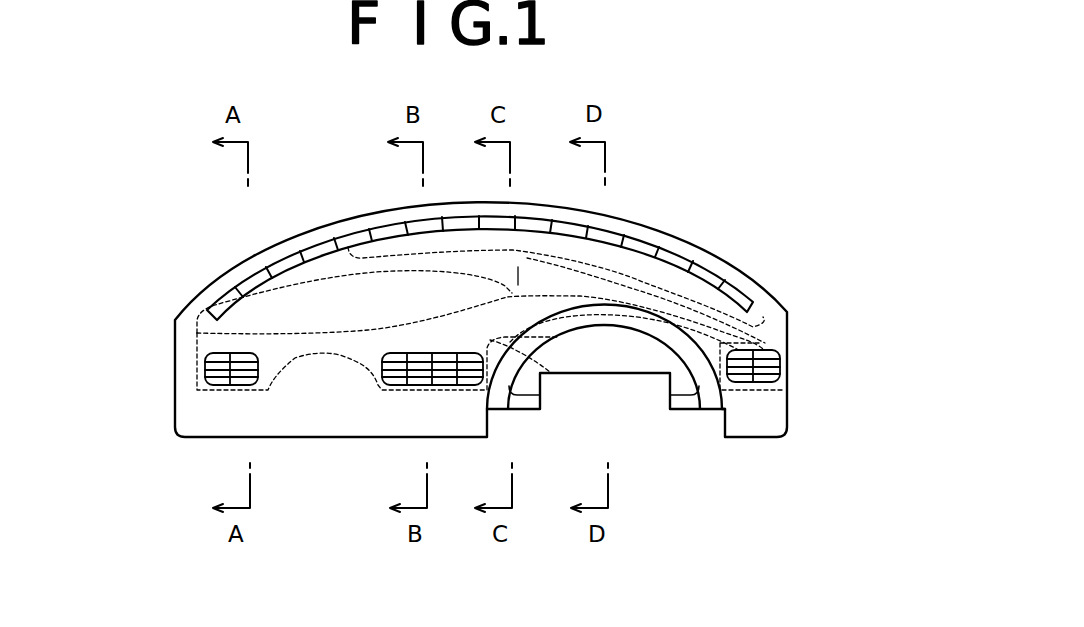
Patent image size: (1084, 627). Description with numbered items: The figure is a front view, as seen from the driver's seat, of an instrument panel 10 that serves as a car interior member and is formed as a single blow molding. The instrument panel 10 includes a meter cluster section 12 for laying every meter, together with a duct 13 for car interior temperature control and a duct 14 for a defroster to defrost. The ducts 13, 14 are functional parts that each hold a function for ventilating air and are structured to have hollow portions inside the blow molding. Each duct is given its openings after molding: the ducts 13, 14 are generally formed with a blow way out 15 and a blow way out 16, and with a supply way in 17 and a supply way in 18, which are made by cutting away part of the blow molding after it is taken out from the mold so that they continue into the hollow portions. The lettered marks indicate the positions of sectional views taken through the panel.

The instrument panel 10 is at (155, 265).
The meter cluster section 12 is at (613, 313).
The duct for car interior temperature control 13 is at (320, 346).
The duct for defroster 14 is at (596, 252).
The blow way out 15 is at (212, 387).
The blow way out 16 is at (645, 243).
The supply way in 17 is at (555, 373).
The supply way in 18 is at (500, 290).